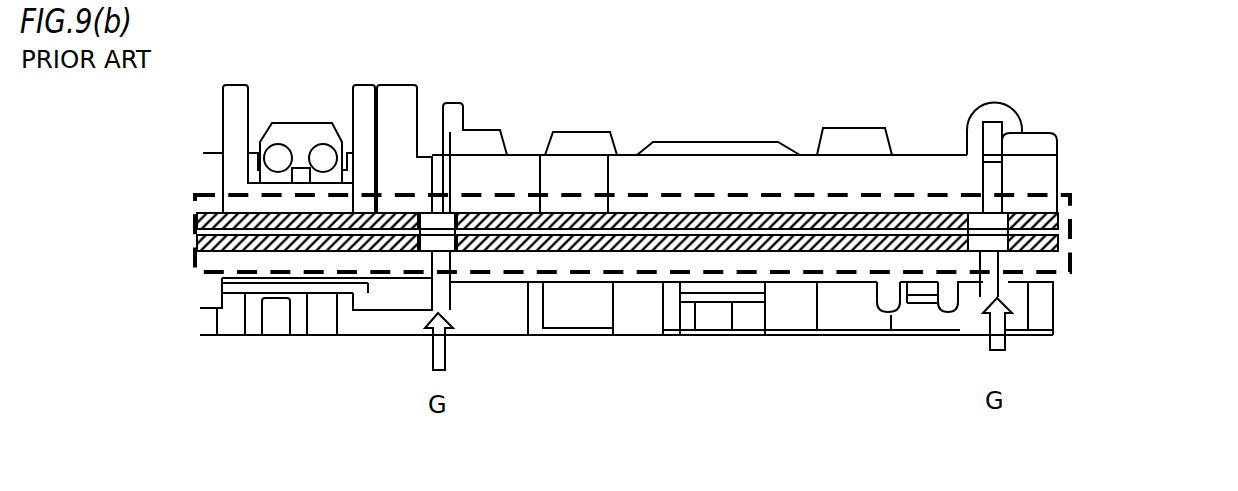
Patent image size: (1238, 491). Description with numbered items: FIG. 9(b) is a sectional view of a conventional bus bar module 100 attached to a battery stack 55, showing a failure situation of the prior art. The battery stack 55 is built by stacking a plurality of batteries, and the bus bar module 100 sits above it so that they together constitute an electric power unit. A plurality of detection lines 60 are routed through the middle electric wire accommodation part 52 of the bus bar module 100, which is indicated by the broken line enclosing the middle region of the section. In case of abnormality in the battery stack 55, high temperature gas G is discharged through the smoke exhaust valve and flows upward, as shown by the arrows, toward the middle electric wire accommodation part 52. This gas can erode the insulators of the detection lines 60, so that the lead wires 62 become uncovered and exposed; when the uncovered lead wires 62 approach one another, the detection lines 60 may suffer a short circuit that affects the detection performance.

The bus bar module 100 is at (727, 125).
The lead wires 62 is at (440, 215).
The detection lines 60 is at (1058, 193).
The middle electric wire accommodation part 52 is at (1078, 232).
The battery stack 55 is at (632, 327).